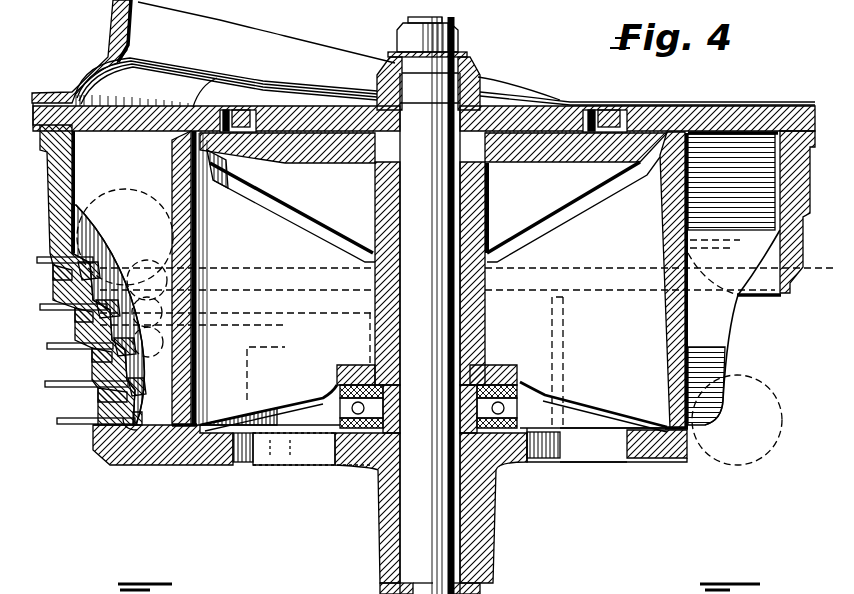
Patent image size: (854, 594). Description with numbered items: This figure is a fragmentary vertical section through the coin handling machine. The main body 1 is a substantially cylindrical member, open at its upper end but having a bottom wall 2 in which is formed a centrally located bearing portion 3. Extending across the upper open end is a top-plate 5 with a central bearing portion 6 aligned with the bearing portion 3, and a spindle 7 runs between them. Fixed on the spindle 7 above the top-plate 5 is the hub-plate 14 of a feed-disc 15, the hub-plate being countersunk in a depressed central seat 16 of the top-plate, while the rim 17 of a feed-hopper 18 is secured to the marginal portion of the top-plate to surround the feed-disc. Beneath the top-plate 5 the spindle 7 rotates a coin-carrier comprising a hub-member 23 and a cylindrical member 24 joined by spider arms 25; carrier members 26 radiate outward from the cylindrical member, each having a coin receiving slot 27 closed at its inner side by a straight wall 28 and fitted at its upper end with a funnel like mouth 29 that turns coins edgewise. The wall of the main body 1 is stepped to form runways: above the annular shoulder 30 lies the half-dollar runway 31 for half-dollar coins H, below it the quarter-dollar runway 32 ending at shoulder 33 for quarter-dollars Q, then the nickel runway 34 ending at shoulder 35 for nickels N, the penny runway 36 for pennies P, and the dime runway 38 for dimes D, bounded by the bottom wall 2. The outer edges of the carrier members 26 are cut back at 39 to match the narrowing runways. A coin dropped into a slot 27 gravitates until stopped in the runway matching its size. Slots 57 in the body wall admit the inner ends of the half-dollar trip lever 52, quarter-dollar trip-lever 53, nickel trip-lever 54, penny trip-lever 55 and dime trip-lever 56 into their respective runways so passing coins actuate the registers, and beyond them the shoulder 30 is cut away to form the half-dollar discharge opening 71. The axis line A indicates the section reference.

The main body 1 is at (54, 178).
The bottom wall 2 is at (175, 458).
The bearing portion 3 is at (382, 518).
The top-plate 5 is at (748, 108).
The bearing portion 6 is at (477, 208).
The spindle 7 is at (403, 220).
The hub-plate 14 is at (503, 106).
The feed-disc 15 is at (218, 80).
The depressed central seat 16 is at (552, 116).
The rim 17 is at (62, 88).
The feed-hopper 18 is at (165, 35).
The hub-member 23 is at (378, 278).
The cylindrical member 24 is at (200, 245).
The spider arms 25 is at (278, 440).
The carrier members 26 is at (60, 196).
The coin receiving slot 27 is at (735, 280).
The straight wall 28 is at (688, 312).
The funnel like mouths 29 is at (713, 160).
The annular shoulder 30 is at (63, 290).
The half-dollar runway 31 is at (60, 242).
The quarter-dollar runway 32 is at (75, 302).
The shoulder 33 is at (368, 318).
The nickel runway 34 is at (92, 338).
The shoulder 35 is at (242, 351).
The penny runway 36 is at (95, 372).
The dime runway 38 is at (98, 412).
The cut back 39 is at (735, 333).
The half-dollar trip lever 52 is at (88, 258).
The quarter-dollar trip-lever 53 is at (105, 296).
The nickel trip-lever 54 is at (110, 328).
The penny trip-lever 55 is at (120, 385).
The dime trip-lever 56 is at (125, 422).
The slots 57 is at (62, 263).
The half-dollar discharge opening 71 is at (778, 296).
The half-dollar coins H is at (145, 225).
The quarter-dollars Q is at (147, 273).
The nickels N is at (149, 310).
The pennies P is at (148, 342).
The dimes D is at (198, 398).
The axis A is at (552, 297).